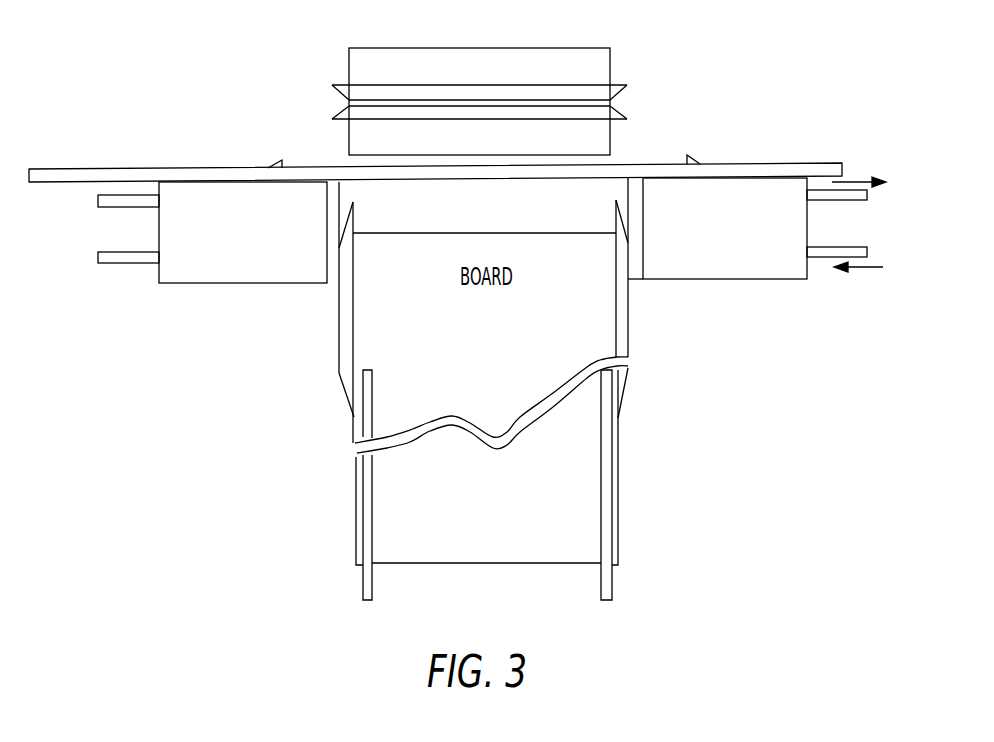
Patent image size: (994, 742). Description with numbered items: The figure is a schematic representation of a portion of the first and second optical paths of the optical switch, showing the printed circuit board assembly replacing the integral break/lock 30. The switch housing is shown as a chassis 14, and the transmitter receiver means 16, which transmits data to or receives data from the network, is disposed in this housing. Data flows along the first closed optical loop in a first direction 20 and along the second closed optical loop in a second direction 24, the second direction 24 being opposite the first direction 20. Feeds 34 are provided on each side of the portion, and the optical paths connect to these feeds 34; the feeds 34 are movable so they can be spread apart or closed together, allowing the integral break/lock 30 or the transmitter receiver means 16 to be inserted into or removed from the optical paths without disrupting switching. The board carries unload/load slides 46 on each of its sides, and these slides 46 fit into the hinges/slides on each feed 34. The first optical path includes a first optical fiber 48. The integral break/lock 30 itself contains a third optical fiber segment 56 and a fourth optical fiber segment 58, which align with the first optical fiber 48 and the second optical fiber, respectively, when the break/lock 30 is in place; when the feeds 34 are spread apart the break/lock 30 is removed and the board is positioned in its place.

The chassis 14 is at (757, 164).
The transmitter receiver means 16 is at (475, 553).
The first direction 20 is at (862, 275).
The second direction 24 is at (855, 180).
The integral break/lock 30 is at (128, 188).
The feeds 34 is at (200, 284).
The unload/load slides 46 is at (338, 327).
The first optical fiber 48 is at (127, 272).
The third optical fiber segment 56 is at (596, 85).
The fourth optical fiber segment 58 is at (382, 125).